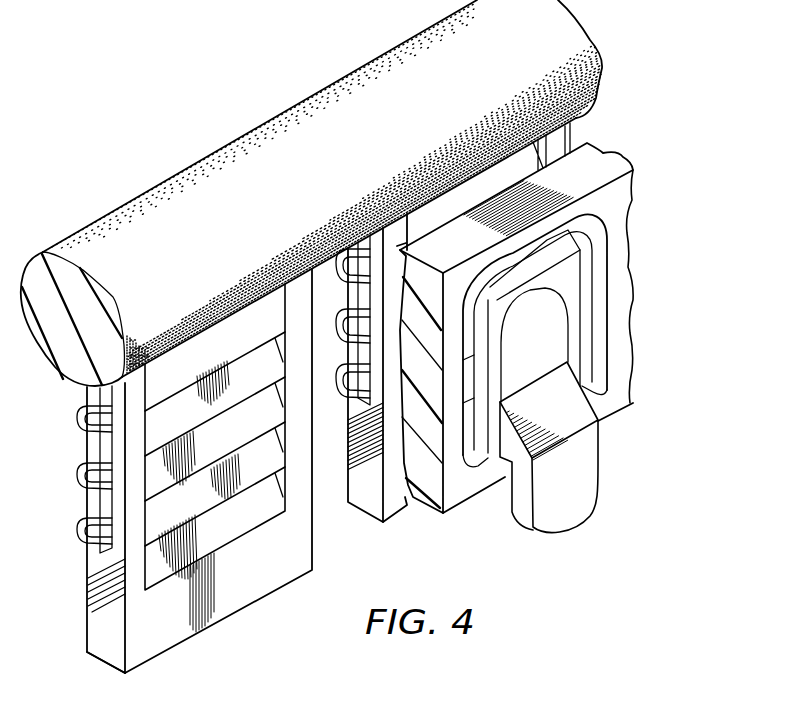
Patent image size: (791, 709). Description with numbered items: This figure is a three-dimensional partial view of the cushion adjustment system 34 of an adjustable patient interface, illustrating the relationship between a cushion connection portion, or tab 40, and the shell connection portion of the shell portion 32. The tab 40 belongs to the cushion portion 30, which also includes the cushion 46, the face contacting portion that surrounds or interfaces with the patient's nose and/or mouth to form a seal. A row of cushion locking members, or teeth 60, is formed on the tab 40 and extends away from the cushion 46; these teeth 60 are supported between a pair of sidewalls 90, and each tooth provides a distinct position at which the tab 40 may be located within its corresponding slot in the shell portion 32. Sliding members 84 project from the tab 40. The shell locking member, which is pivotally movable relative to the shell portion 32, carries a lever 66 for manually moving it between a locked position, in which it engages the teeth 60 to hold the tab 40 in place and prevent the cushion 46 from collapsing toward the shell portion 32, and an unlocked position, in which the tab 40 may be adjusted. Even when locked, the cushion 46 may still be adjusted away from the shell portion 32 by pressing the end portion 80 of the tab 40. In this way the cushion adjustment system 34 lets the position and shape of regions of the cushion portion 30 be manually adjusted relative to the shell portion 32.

The cushion portion 30 is at (311, 193).
The cushion 46 is at (287, 110).
The cushion connection portion 40 is at (293, 400).
The sliding members 84 is at (76, 416).
The sidewalls 90 is at (135, 428).
The cushion locking members 60 is at (205, 445).
The end portion 80 is at (152, 643).
The shell portion 32 is at (556, 342).
The cushion adjustment system 34 is at (648, 362).
The lever 66 is at (576, 503).